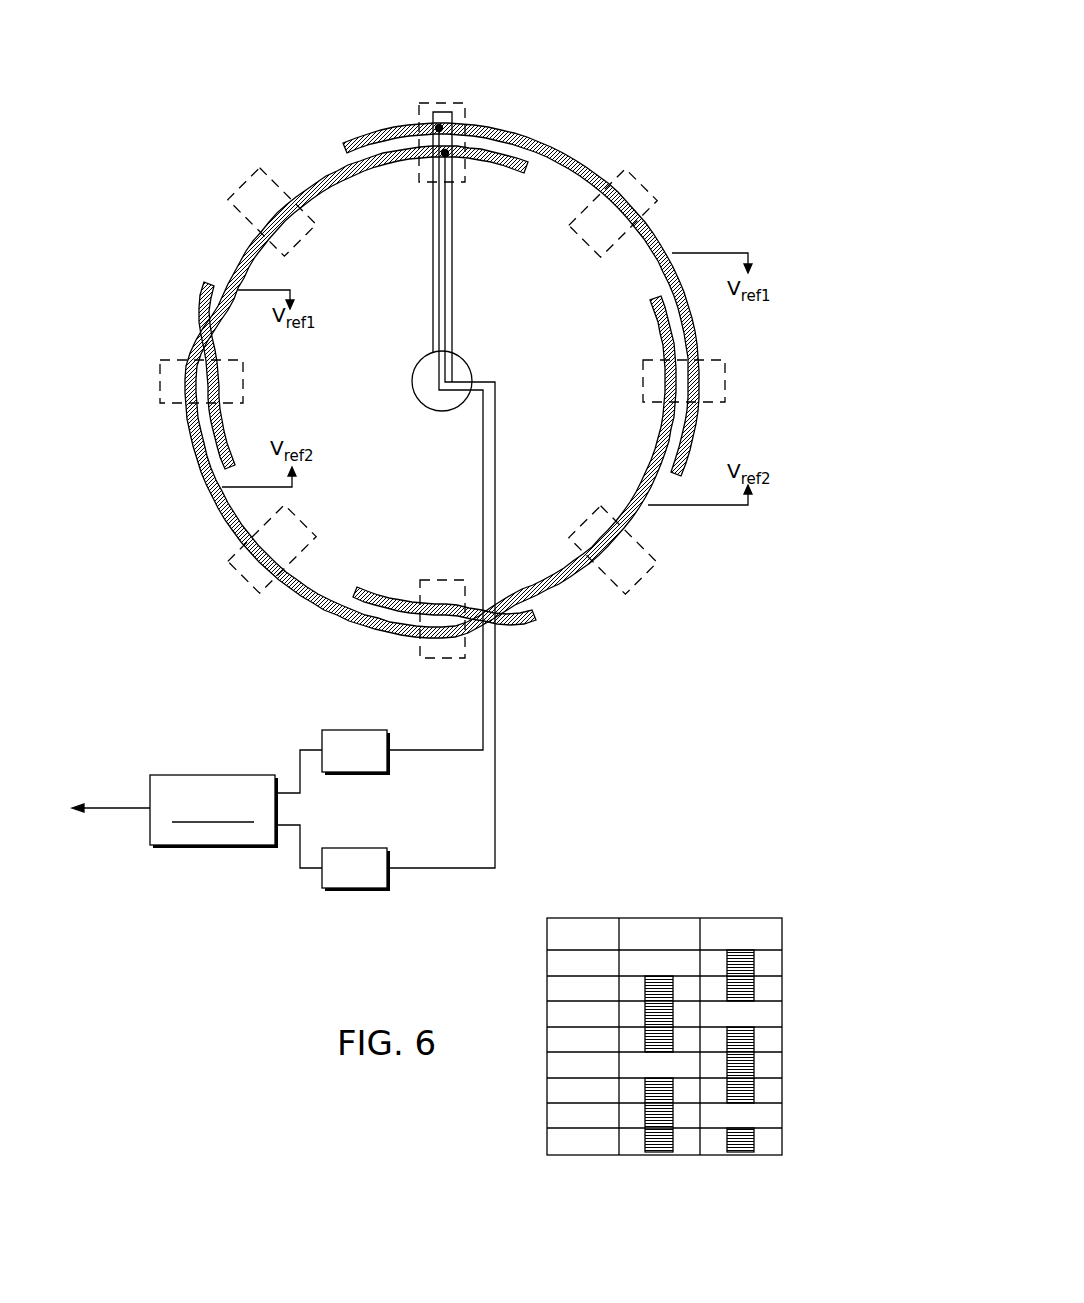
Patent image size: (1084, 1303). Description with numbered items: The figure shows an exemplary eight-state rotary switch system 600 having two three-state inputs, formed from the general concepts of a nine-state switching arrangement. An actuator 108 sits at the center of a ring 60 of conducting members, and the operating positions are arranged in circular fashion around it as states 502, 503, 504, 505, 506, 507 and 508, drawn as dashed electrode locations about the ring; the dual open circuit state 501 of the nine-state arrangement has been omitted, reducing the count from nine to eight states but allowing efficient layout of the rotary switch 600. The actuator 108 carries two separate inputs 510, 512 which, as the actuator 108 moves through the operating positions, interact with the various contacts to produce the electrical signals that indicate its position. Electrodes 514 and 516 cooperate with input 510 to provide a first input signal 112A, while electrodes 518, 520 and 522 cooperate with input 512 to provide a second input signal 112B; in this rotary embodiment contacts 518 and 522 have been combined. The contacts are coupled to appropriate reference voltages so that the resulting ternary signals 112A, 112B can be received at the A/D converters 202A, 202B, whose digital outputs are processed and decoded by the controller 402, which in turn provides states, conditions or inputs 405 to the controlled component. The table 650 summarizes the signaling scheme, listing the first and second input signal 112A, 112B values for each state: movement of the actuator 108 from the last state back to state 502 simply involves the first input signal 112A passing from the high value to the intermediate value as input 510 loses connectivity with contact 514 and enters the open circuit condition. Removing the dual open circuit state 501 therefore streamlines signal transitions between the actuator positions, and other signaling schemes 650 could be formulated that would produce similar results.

The eight-state rotary switch system 600 is at (672, 46).
The rotatable conductive ring 60 is at (312, 602).
The actuator 108 is at (416, 363).
The first input signal (Input1) 112A is at (436, 216).
The second input signal (Input 2) 112B is at (453, 298).
The A/D converter 202A is at (365, 730).
The A/D converter 202B is at (365, 888).
The controller 402 is at (226, 775).
The inputs 405 is at (118, 808).
The position (state) 501 is at (160, 376).
The position (state) 502 is at (240, 190).
The position (state) 503 is at (445, 102).
The position (state) 504 is at (650, 190).
The position (state) 505 is at (725, 378).
The position (state) 506 is at (655, 575).
The position (state) 507 is at (442, 660).
The position (state) 508 is at (236, 578).
The input 510 is at (463, 128).
The input 512 is at (437, 126).
The electrode (contact) 514 is at (313, 588).
The electrode (contact) 516 is at (570, 170).
The electrode (contact) 518 is at (635, 502).
The electrode (contact) 520 is at (327, 197).
The electrode (contact) 522 is at (757, 1143).
The table (signaling scheme) 650 is at (730, 838).